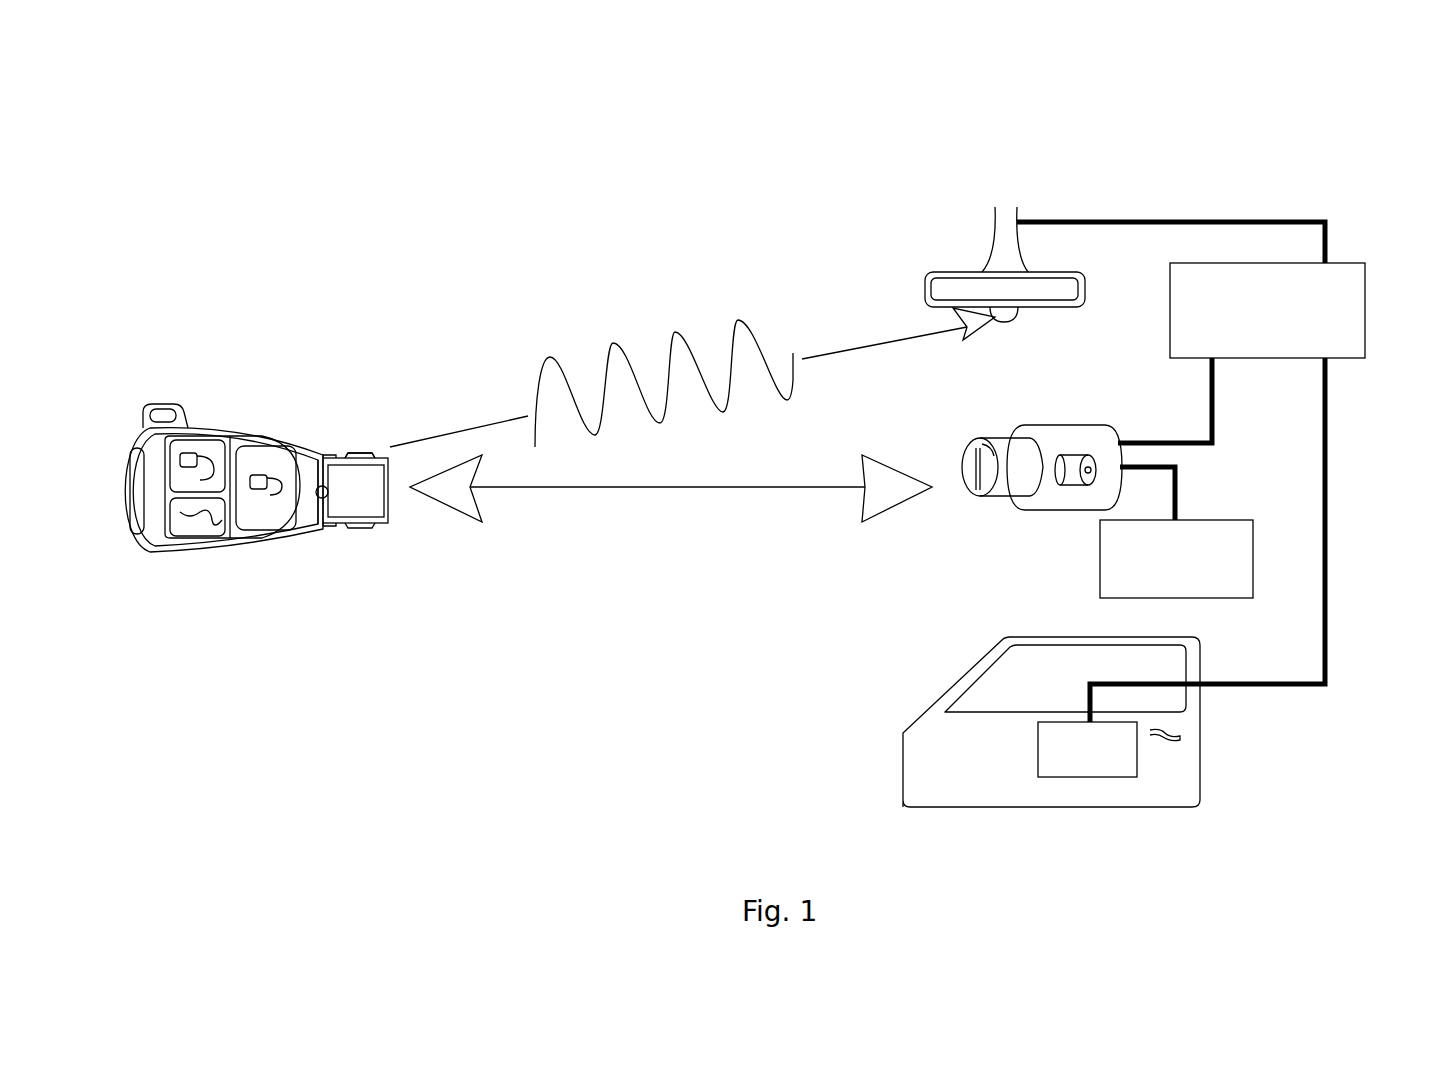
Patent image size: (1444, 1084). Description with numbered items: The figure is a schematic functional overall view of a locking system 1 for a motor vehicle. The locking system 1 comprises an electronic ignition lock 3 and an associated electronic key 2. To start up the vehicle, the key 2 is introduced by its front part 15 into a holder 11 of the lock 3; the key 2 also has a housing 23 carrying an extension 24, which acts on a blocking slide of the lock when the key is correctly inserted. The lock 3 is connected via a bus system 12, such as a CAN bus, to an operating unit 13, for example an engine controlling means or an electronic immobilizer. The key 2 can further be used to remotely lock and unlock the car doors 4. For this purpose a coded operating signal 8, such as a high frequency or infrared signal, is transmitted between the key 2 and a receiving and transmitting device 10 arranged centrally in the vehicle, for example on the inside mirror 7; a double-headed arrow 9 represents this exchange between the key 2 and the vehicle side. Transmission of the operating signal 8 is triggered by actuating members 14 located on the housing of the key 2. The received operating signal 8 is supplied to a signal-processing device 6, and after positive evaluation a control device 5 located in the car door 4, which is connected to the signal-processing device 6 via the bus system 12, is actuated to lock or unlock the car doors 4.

The locking system 1 is at (682, 195).
The electronic key 2 is at (225, 556).
The electronic lock 3 is at (1090, 438).
The car door 4 is at (1022, 780).
The control device 5 is at (1103, 777).
The signal-processing device 6 is at (1345, 263).
The inside mirror 7 is at (960, 288).
The coded operating signal 8 is at (860, 348).
The bidirectional communication 9 is at (688, 490).
The receiving and transmitting device 10 is at (1008, 313).
The holder 11 is at (982, 493).
The bus system 12 is at (1260, 223).
The operating unit 13 is at (1215, 598).
The actuating members 14 is at (212, 452).
The front part 15 is at (355, 503).
The housing 23 is at (312, 508).
The extension 24 is at (353, 462).